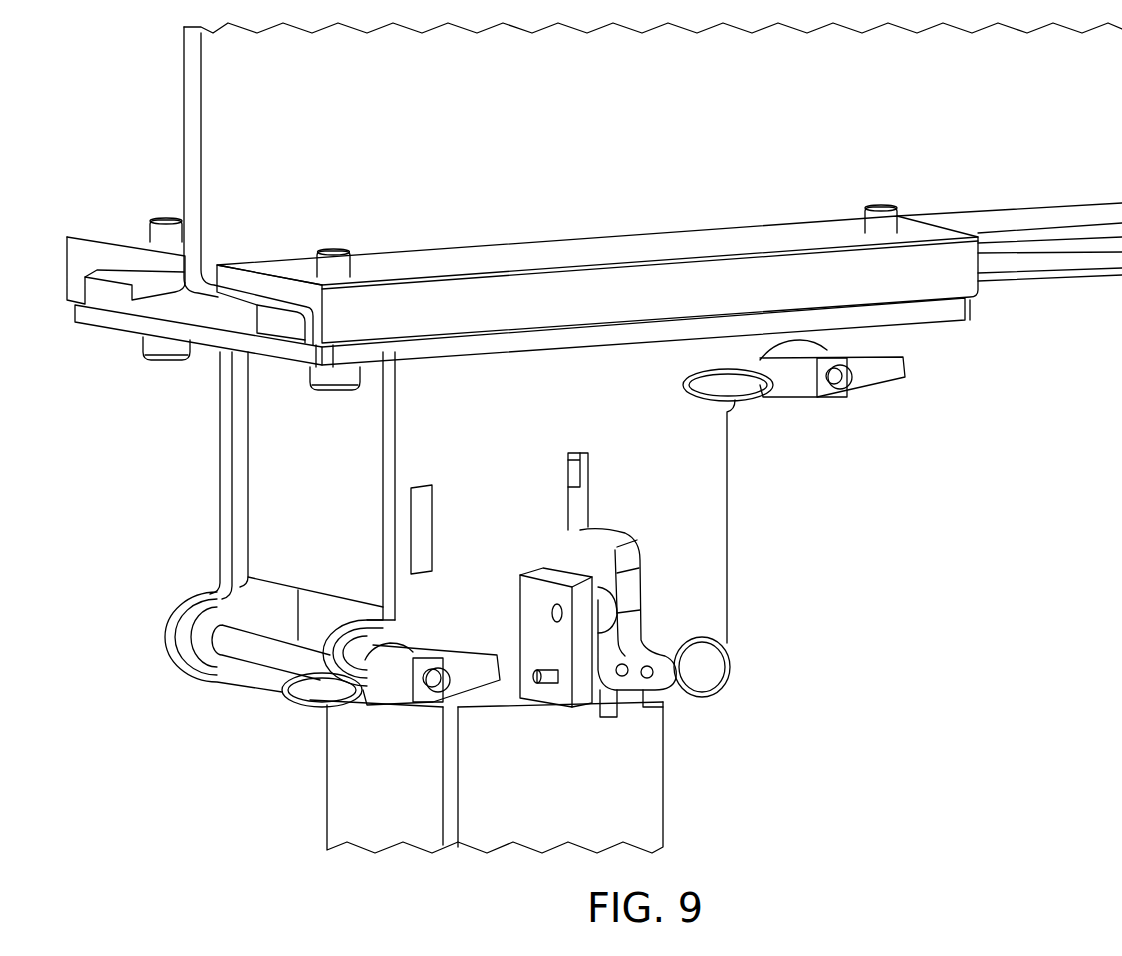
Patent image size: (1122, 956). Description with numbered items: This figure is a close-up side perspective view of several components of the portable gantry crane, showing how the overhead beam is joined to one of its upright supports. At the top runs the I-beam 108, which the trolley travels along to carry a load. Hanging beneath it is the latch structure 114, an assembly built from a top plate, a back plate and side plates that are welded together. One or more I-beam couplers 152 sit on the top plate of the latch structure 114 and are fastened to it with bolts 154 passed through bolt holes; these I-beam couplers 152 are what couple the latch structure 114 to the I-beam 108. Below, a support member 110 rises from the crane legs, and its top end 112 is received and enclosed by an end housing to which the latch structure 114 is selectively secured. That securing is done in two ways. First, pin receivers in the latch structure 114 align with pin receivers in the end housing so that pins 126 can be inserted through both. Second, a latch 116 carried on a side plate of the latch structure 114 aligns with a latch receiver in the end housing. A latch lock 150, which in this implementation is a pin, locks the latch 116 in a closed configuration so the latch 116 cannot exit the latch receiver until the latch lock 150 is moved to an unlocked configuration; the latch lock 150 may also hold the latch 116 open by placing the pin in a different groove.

The I-beam 108 is at (182, 77).
The I-beam coupler 152 is at (108, 238).
The bolt 154 is at (155, 362).
The pin 126 is at (882, 390).
The latch structure 114 is at (727, 522).
The latch 116 is at (618, 530).
The top end 112 is at (665, 735).
The latch lock 150 is at (605, 692).
The support member 110 is at (665, 787).